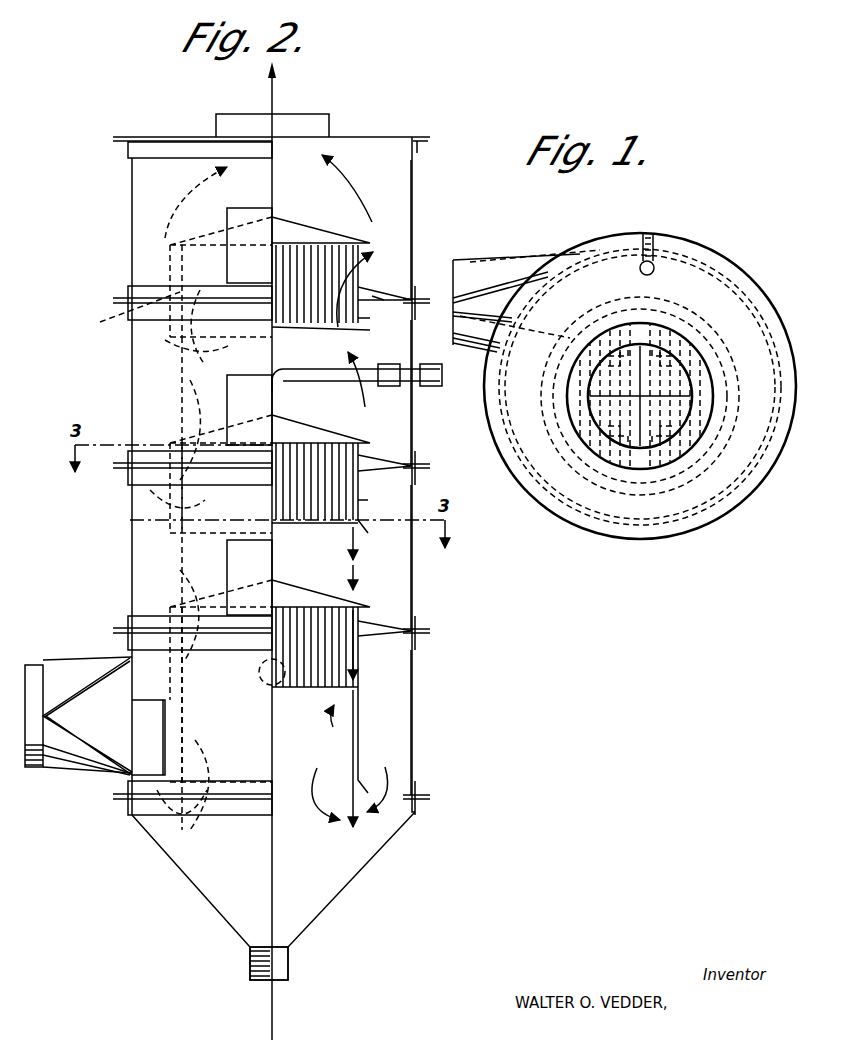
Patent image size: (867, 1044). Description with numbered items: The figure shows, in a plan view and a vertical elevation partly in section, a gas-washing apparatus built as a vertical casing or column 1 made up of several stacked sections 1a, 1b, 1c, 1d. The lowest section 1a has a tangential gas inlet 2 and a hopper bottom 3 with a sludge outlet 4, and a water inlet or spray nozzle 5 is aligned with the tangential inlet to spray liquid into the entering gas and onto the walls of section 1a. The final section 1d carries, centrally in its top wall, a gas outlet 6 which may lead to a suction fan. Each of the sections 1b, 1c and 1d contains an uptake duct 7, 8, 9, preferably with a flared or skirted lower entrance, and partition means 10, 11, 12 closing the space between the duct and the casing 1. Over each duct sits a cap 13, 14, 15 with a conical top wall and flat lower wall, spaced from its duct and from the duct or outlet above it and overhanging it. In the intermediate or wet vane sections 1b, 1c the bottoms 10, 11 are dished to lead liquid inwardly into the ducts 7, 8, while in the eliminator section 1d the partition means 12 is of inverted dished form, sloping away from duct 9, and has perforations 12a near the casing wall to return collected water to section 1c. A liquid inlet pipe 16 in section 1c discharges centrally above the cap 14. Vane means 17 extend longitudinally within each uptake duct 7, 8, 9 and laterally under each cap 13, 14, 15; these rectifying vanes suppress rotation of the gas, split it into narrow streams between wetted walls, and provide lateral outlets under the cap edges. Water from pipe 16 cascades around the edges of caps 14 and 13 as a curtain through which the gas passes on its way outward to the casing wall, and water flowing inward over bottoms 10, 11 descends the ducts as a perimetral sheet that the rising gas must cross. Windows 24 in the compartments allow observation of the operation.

In FIG. 2, the vertical casing or column 1 is at (414, 180).
In FIG. 1, the vertical casing or column 1 is at (760, 307).
In FIG. 2, the section 1a is at (414, 724).
In FIG. 2, the intermediate or wet vane section 1b is at (414, 603).
In FIG. 2, the intermediate or wet vane section 1c is at (414, 411).
In FIG. 2, the final or eliminator section 1d is at (414, 222).
In FIG. 2, the tangential gas inlet 2 is at (55, 664).
In FIG. 1, the tangential gas inlet 2 is at (484, 268).
In FIG. 2, the hopper bottom 3 is at (212, 880).
In FIG. 2, the sludge outlet 4 is at (252, 969).
In FIG. 2, the water inlet or spray nozzle 5 is at (264, 680).
In FIG. 1, the water inlet or spray nozzle 5 is at (637, 265).
In FIG. 2, the gas outlet 6 is at (332, 128).
In FIG. 1, the gas outlet 6 is at (652, 345).
In FIG. 2, the uptake duct 7 is at (361, 760).
In FIG. 2, the uptake duct 8 is at (364, 500).
In FIG. 2, the uptake duct 9 is at (364, 318).
In FIG. 2, the partition means 10 is at (362, 648).
In FIG. 2, the partition means 11 is at (340, 475).
In FIG. 2, the partition means 12 is at (386, 296).
In FIG. 2, the perforations 12a is at (372, 296).
In FIG. 2, the cap 13 is at (298, 596).
In FIG. 2, the cap or baffle 14 is at (312, 440).
In FIG. 2, the cap 15 is at (300, 232).
In FIG. 1, the cap 15 is at (648, 442).
In FIG. 2, the liquid inlet pipe 16 is at (362, 372).
In FIG. 2, the vane means 17 is at (305, 503).
In FIG. 2, the windows 24 is at (235, 256).
In FIG. 1, the windows 24 is at (520, 477).